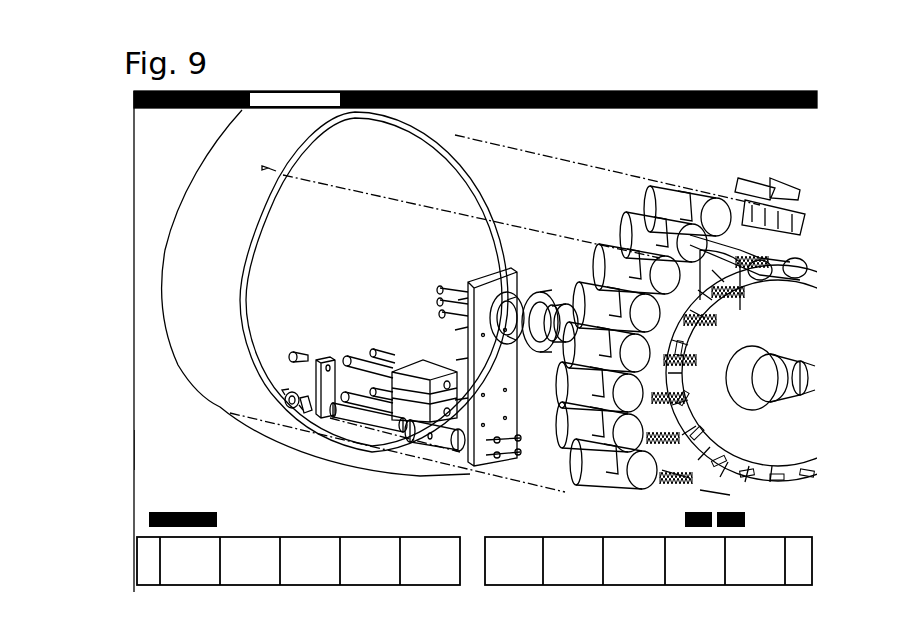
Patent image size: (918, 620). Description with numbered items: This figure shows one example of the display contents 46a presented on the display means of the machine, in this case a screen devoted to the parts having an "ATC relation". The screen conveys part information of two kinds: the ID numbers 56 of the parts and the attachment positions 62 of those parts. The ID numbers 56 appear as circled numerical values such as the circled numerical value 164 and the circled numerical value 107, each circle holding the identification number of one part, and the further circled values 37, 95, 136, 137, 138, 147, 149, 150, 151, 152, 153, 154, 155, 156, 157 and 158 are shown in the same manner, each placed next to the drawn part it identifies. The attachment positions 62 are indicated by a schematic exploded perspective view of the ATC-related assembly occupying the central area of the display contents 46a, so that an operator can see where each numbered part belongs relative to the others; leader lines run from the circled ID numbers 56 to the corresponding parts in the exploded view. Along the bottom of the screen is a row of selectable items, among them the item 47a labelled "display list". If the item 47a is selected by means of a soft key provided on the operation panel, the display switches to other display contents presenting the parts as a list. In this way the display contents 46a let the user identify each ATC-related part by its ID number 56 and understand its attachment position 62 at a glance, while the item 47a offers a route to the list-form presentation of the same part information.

The pin 37 is at (295, 347).
The display contents 46a is at (737, 137).
The item 47a is at (150, 556).
The ID numbers 56 is at (146, 455).
The attachment positions 62 is at (575, 133).
The cylinder 95 is at (472, 268).
The circled numerical value 107 is at (220, 407).
The bearing 136 is at (514, 290).
The tool pot 137 is at (643, 300).
The tool holder 138 is at (743, 173).
The shaft 147 is at (570, 303).
The coupling 149 is at (553, 287).
The collar 150 is at (533, 287).
The bracket plate 151 is at (490, 272).
The block 152 is at (430, 355).
The guide rod 153 is at (387, 345).
The cylinder 154 is at (422, 452).
The stopper block 155 is at (324, 352).
The piston rod 156 is at (357, 427).
The bracket 157 is at (310, 417).
The clamp 158 is at (290, 407).
The circled numerical value 164 is at (151, 460).